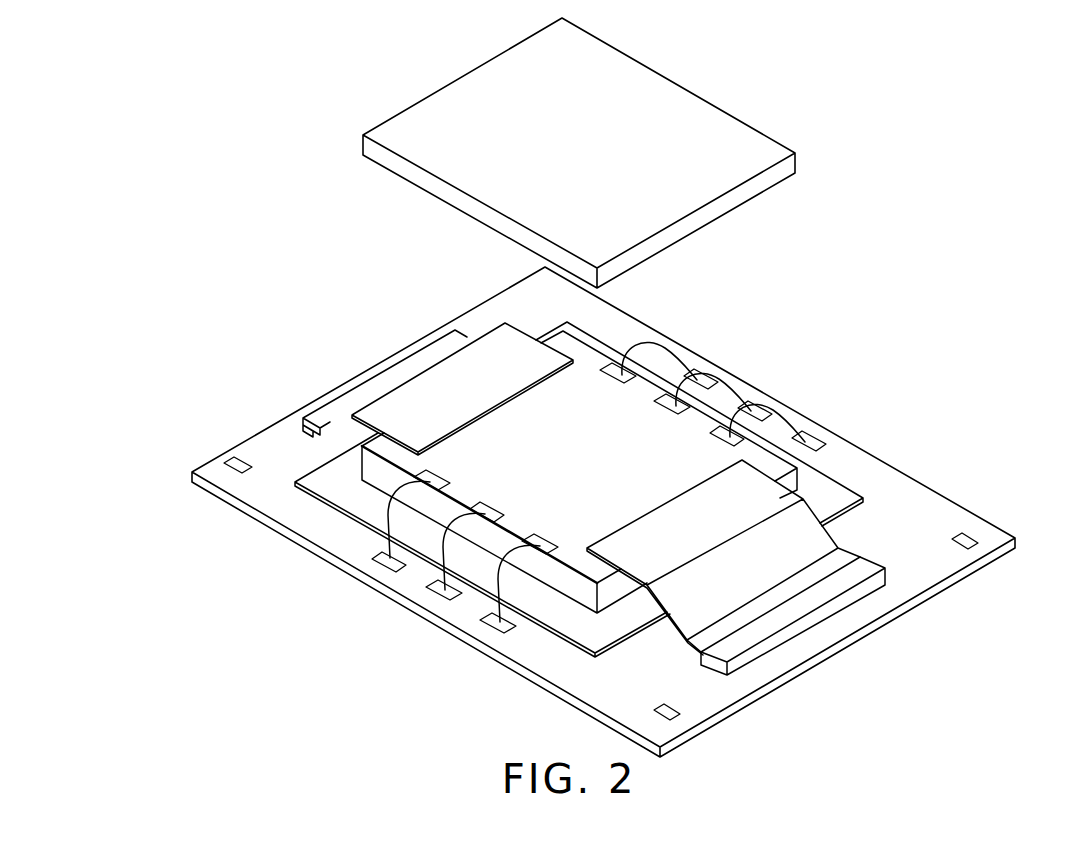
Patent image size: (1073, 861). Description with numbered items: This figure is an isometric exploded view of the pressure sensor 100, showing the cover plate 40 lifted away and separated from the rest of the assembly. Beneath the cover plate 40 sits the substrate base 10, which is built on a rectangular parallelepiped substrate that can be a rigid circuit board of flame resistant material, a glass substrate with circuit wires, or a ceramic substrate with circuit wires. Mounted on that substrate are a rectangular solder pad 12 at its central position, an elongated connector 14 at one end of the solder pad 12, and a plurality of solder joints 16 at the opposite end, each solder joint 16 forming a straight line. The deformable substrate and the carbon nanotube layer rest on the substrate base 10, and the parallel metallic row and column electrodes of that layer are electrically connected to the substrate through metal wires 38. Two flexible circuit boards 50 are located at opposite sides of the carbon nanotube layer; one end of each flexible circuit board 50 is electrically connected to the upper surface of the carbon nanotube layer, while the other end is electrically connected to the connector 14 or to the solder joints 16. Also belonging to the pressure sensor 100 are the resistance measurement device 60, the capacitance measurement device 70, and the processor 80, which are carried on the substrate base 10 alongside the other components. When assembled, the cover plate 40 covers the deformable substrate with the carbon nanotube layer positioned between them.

The pressure sensor 100 is at (240, 87).
The substrate base 10 is at (922, 503).
The solder pad 12 is at (572, 622).
The connector 14 is at (860, 572).
The solder joints 16 is at (307, 432).
The metal wires 38 is at (663, 337).
The cover plate 40 is at (695, 122).
The flexible circuit boards 50 is at (803, 518).
The resistance measurement device 60 is at (673, 707).
The capacitance measurement device 70 is at (967, 535).
The processor 80 is at (238, 464).